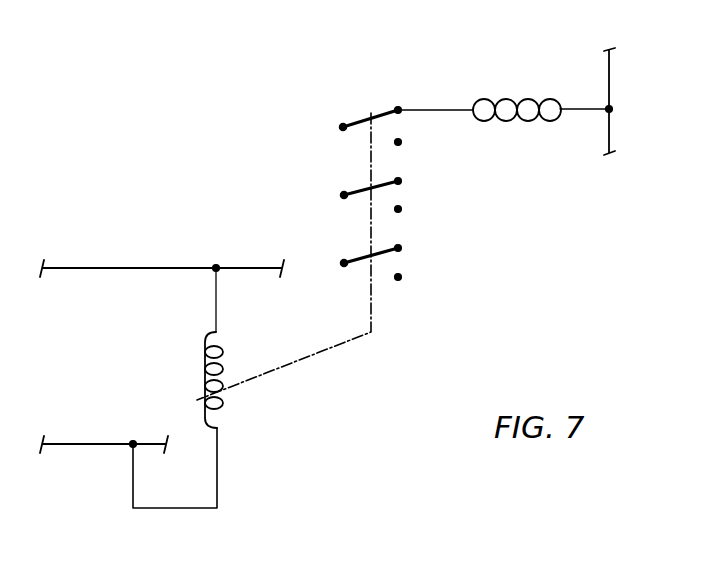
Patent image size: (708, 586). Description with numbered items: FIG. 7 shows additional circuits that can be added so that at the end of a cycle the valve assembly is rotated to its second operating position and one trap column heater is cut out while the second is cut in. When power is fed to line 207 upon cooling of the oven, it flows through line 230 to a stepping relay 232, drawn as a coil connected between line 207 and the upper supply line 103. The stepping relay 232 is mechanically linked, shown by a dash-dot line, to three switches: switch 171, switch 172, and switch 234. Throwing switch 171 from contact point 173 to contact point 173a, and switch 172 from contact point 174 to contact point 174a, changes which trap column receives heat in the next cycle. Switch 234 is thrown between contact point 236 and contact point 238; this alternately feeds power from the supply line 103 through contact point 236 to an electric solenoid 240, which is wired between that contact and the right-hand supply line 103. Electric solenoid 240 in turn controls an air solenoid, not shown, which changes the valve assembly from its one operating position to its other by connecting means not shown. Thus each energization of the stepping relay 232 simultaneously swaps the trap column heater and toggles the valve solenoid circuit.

The power supply line 103 is at (611, 84).
The switch 171 is at (358, 192).
The switch 172 is at (358, 258).
The contact point 173 is at (398, 181).
The contact point 173a is at (398, 209).
The contact point 174 is at (398, 248).
The contact point 174a is at (398, 277).
The line 207 is at (85, 443).
The line 230 is at (190, 510).
The stepping relay 232 is at (225, 398).
The switch 234 is at (343, 127).
The contact point 236 is at (398, 110).
The contact point 238 is at (398, 142).
The electric solenoid 240 is at (511, 99).